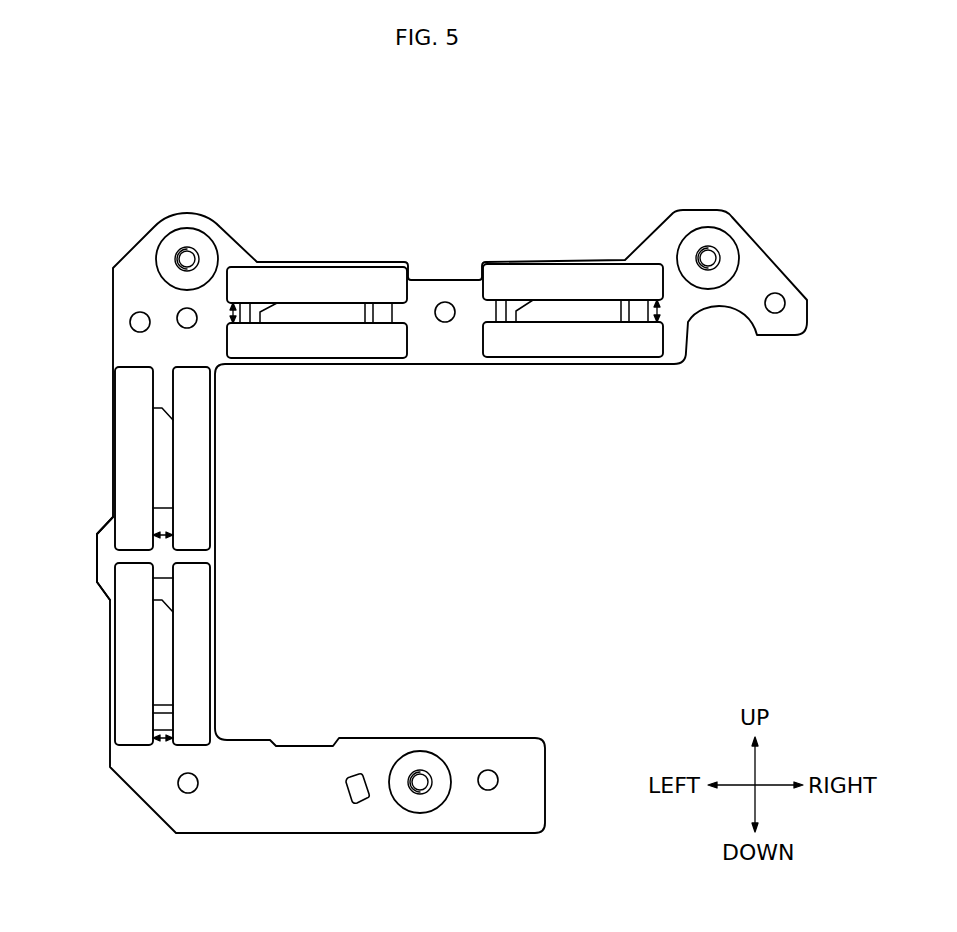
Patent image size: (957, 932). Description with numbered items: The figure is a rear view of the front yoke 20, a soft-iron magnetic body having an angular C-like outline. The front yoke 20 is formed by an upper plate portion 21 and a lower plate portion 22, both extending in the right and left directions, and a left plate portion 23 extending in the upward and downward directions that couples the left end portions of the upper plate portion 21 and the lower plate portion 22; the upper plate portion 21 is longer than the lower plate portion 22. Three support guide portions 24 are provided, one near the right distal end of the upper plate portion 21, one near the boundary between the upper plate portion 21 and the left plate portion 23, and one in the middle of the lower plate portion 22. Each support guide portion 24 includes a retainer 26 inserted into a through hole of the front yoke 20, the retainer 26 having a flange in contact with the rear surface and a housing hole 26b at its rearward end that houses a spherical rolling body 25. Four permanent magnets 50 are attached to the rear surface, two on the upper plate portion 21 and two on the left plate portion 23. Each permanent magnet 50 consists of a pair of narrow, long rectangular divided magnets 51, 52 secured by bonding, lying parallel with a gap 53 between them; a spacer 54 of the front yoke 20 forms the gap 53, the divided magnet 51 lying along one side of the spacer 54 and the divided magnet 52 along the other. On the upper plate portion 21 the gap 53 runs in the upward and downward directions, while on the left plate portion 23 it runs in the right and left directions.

The front yoke 20 is at (289, 846).
The upper plate portion 21 is at (448, 290).
The lower plate portion 22 is at (486, 822).
The left plate portion 23 is at (100, 540).
The support guide portion 24 is at (172, 228).
The spherical rolling body 25 is at (185, 251).
The retainer 26 is at (160, 253).
The housing hole 26b is at (193, 257).
The permanent magnet 50 is at (386, 468).
The divided magnet 51 is at (385, 272).
The divided magnet 52 is at (373, 343).
The gap 53 is at (232, 312).
The spacer 54 is at (311, 313).